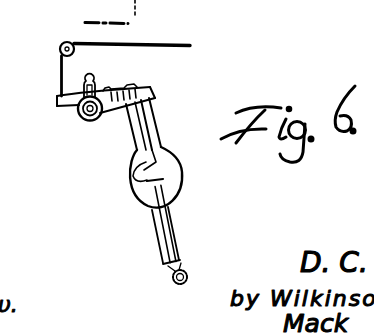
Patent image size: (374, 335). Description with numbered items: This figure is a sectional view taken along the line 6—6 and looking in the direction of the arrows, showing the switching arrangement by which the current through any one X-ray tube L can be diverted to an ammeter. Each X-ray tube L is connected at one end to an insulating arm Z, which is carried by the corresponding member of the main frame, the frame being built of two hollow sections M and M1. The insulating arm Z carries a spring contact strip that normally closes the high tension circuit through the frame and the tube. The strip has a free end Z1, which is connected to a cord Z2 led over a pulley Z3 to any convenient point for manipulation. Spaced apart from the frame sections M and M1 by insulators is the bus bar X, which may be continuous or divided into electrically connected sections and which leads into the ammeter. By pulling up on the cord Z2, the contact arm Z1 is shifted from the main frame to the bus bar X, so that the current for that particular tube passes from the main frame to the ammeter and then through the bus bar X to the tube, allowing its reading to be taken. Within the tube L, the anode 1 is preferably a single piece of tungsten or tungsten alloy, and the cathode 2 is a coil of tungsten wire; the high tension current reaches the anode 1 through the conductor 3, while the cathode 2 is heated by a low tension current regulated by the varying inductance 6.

The pulley Z3 is at (62, 44).
The cord Z2 is at (198, 37).
The bus bar X is at (57, 96).
The free end of the contact strip Z1 is at (56, 109).
The main frame section M is at (81, 124).
The insulating arm Z is at (118, 88).
The X-ray tube L is at (183, 182).
The anode 1 is at (137, 175).
The cathode 2 is at (148, 182).
The conductor 3 is at (183, 265).
The main frame section M1 is at (180, 285).
The section line 6— 6 is at (172, 275).